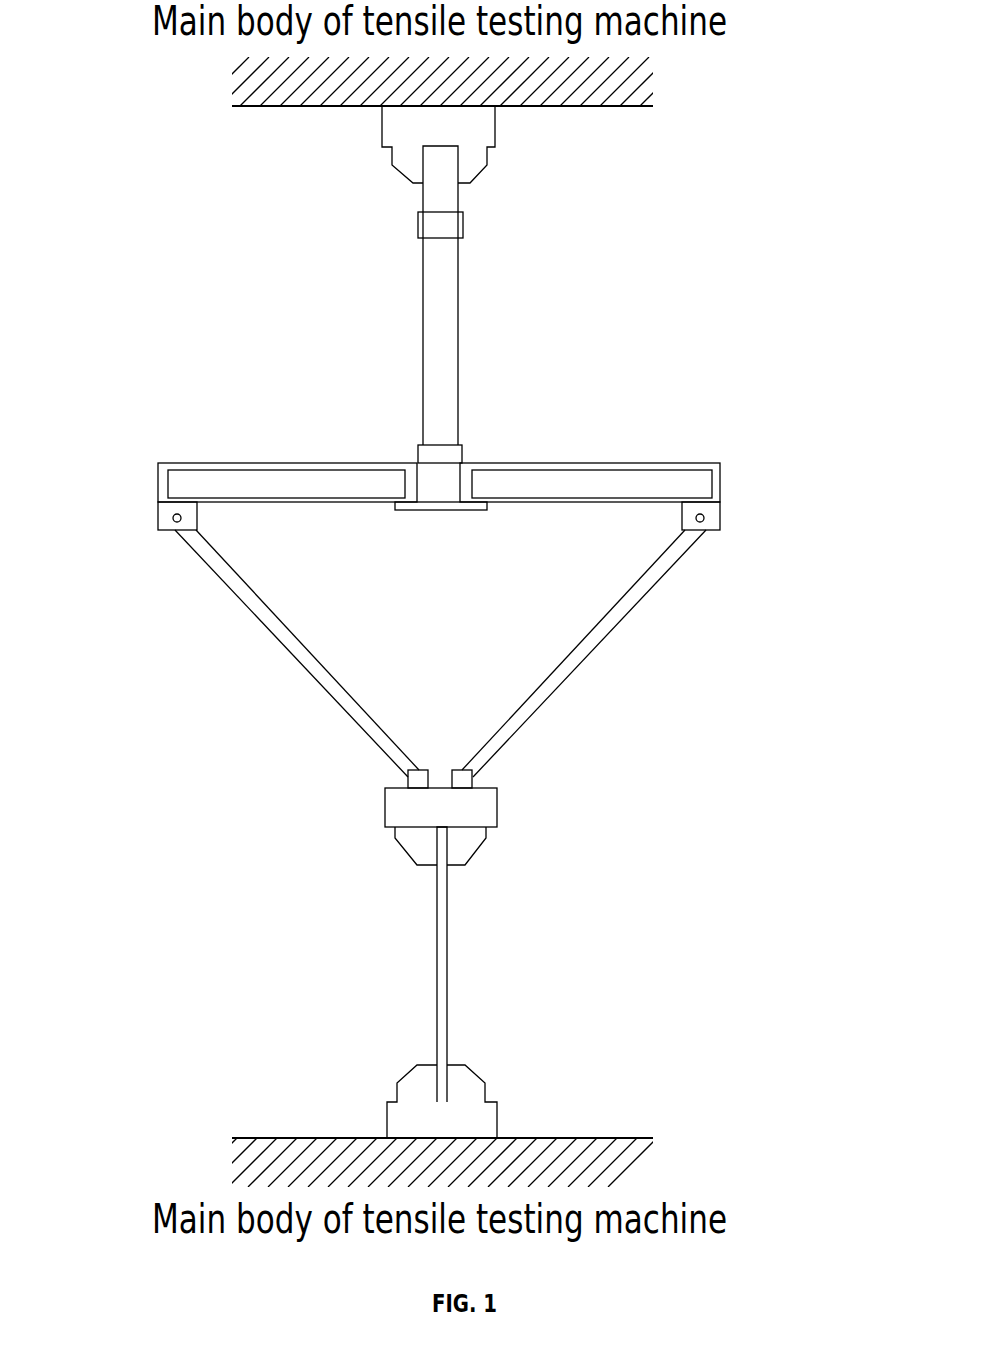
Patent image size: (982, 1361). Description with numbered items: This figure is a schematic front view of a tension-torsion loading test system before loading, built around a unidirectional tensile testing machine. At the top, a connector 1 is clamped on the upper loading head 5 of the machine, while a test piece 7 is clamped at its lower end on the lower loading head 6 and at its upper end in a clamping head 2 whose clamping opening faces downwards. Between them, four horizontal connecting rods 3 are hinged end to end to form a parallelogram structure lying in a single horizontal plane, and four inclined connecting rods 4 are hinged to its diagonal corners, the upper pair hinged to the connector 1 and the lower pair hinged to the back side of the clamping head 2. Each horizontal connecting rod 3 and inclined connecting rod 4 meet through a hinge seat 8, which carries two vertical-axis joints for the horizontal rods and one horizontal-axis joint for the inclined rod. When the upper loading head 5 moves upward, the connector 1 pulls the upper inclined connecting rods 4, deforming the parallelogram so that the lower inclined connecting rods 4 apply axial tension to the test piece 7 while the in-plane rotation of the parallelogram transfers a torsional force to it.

The connector 1 is at (440, 182).
The clamping head 2 is at (393, 830).
The horizontal connecting rod 3 is at (300, 492).
The inclined connecting rod 4 is at (312, 663).
The upper loading head 5 is at (475, 138).
The lower loading head 6 is at (487, 1095).
The test piece 7 is at (435, 973).
The hinge seat 8 is at (158, 530).